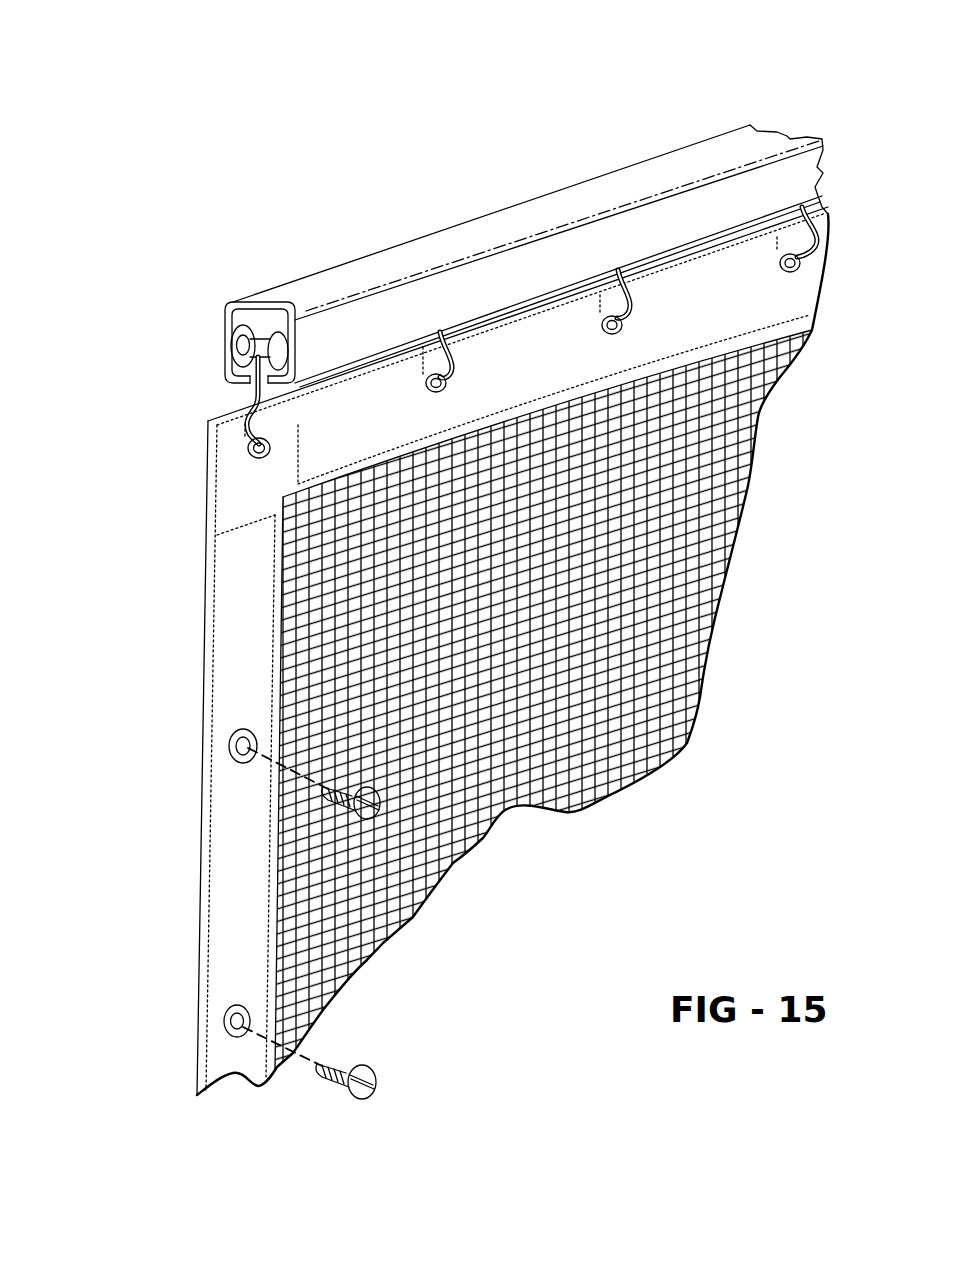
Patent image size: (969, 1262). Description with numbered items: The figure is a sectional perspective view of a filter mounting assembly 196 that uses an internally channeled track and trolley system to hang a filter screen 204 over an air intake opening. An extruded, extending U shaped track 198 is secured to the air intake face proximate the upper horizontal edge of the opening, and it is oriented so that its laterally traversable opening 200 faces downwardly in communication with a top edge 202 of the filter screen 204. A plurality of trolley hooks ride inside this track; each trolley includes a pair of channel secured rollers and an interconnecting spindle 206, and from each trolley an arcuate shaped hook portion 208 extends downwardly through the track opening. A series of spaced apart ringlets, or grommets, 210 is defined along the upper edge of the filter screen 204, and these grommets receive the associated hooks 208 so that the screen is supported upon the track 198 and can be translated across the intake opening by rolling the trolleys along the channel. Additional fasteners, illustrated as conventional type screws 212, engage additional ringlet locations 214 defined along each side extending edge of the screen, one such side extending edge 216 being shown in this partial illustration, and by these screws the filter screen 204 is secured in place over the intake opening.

The filter mounting assembly 196 is at (347, 153).
The U shaped track 198 is at (428, 242).
The laterally traversable opening 200 is at (256, 378).
The top edge 202 is at (229, 420).
The filter screen 204 is at (318, 595).
The channel secured rollers and interconnecting spindle 206 is at (249, 337).
The arcuate shaped hook portion 208 is at (430, 400).
The ringlets or grommets 210 is at (262, 459).
The screws 212 is at (270, 1073).
The ringlet locations 214 is at (230, 744).
The side extending edge 216 is at (232, 650).